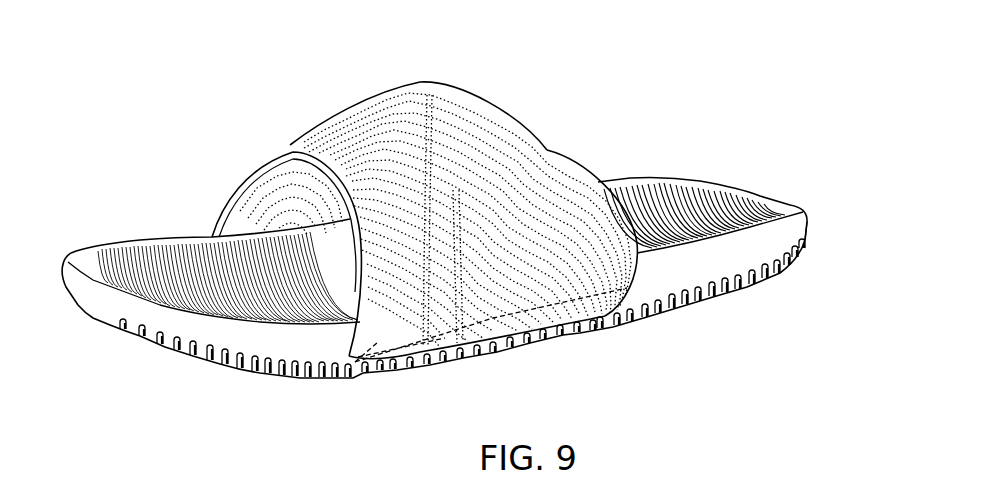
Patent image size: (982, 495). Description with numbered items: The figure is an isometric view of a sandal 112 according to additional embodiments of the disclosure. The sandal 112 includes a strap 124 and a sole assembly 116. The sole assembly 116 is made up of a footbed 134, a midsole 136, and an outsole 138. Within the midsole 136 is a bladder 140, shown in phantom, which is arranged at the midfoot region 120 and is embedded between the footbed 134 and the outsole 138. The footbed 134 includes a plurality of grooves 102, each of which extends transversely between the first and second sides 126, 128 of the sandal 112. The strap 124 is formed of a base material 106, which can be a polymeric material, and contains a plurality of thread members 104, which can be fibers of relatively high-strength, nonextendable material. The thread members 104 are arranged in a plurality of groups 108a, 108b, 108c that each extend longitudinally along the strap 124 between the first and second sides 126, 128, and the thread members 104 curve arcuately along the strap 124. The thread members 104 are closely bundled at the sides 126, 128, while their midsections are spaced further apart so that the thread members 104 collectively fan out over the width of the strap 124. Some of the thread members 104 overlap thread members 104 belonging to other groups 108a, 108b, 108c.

The grooves 102 is at (680, 200).
The thread members 104 is at (487, 130).
The base material 106 is at (533, 140).
The first group of thread members 108a is at (397, 317).
The second group of thread members 108b is at (617, 327).
The third group of thread members 108c is at (560, 182).
The sandal 112 is at (556, 76).
The sole assembly 116 is at (783, 230).
The midfoot region 120 is at (280, 242).
The strap 124 is at (453, 97).
The first side 126 is at (300, 227).
The second side 128 is at (343, 317).
The footbed 134 is at (773, 207).
The midsole 136 is at (723, 260).
The outsole 138 is at (780, 273).
The bladder 140 is at (493, 318).